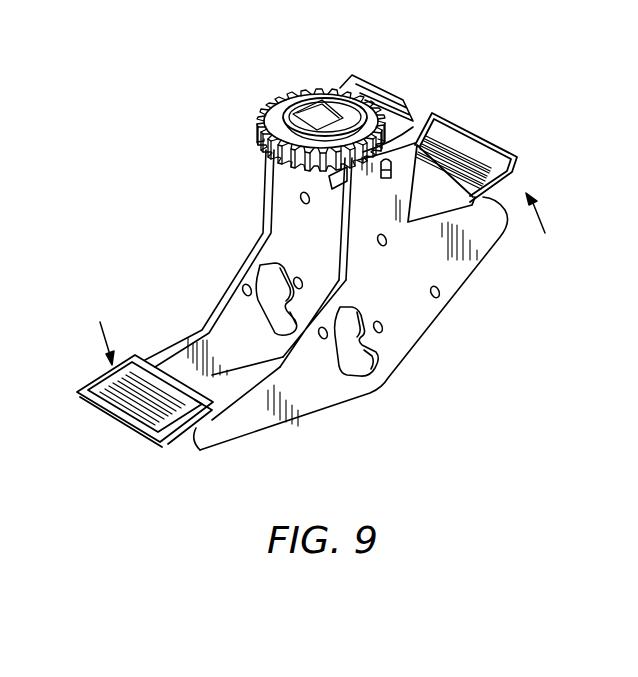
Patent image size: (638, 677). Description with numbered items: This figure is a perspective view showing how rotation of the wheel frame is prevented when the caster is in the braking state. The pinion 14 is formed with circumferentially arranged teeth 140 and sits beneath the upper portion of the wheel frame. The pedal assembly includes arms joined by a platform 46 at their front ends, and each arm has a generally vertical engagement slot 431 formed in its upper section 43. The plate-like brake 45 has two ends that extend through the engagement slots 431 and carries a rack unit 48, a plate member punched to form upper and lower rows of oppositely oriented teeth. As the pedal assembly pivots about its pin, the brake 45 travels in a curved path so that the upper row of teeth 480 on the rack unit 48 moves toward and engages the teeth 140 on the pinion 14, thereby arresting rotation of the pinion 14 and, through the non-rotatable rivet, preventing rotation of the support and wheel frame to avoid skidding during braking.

The pinion 14 is at (279, 101).
The circumferentially arranged teeth 140 is at (347, 90).
The upper row of teeth 480 is at (358, 94).
The rack unit 48 is at (404, 99).
The upper section 43 is at (265, 177).
The brake 45 is at (342, 184).
The engagement slot 431 is at (385, 181).
The platform 46 is at (123, 418).